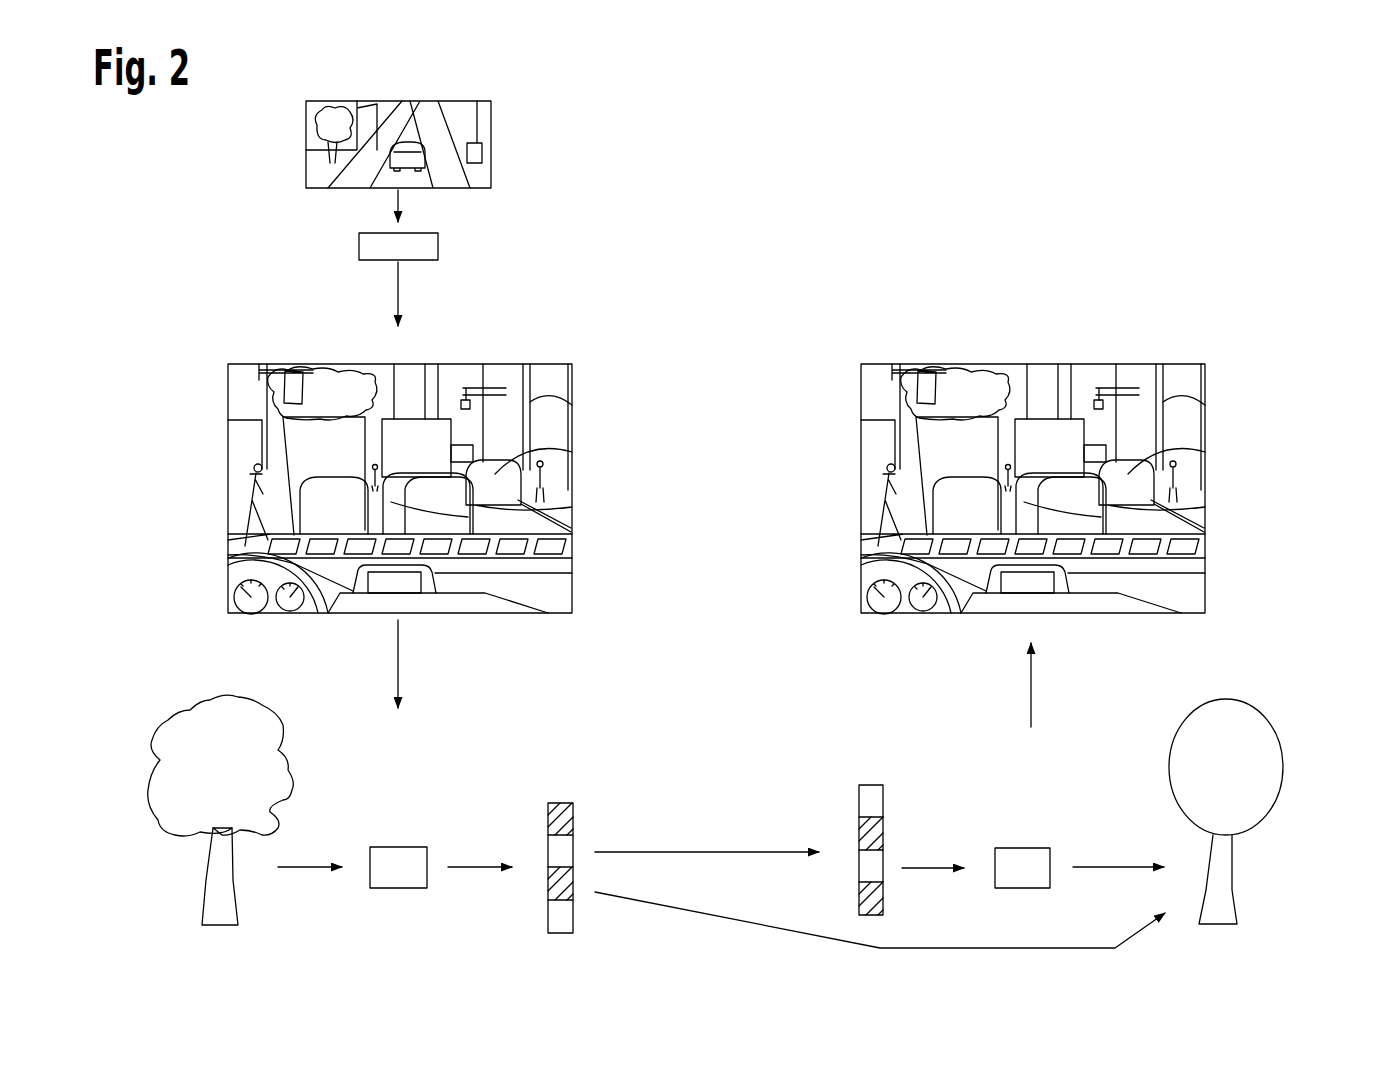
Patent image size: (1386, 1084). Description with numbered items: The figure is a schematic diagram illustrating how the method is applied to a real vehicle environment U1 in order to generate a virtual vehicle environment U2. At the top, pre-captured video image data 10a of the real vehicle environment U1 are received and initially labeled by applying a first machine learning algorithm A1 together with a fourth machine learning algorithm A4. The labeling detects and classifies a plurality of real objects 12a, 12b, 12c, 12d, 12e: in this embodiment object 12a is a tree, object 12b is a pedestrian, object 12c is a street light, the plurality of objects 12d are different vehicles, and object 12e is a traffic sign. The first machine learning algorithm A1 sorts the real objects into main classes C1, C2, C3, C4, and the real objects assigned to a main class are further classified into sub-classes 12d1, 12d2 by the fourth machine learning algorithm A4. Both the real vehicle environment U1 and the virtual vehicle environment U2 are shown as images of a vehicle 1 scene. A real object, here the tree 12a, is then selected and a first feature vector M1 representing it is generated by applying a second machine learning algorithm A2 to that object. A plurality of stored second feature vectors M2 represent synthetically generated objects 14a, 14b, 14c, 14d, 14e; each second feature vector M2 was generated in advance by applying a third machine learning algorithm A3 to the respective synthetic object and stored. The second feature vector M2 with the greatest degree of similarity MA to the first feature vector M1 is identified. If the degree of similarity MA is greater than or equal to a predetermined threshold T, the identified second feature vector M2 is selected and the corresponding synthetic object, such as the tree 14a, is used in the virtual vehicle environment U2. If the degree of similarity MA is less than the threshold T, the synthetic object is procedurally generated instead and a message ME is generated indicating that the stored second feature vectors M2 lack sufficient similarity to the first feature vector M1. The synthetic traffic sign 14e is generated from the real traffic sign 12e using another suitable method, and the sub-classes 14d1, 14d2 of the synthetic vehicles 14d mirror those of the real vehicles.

The vehicle 1 is at (400, 623).
The pre-captured video image data 10a is at (508, 142).
The real object (tree) 12a is at (322, 347).
The real object (pedestrian) 12b is at (186, 505).
The real object (street light) 12c is at (588, 413).
The real objects (vehicles) 12d is at (624, 483).
The sub-class 12d1 is at (624, 470).
The sub-class 12d2 is at (630, 518).
The real object (traffic sign) 12e is at (277, 339).
The synthetically generated object 14a is at (1129, 599).
The synthetically generated object 14b is at (835, 505).
The synthetically generated object 14c is at (1202, 413).
The synthetically generated object 14d is at (1237, 482).
The first other vehicle (second image) 14d1 is at (1237, 469).
The second other vehicle (second image) 14d2 is at (1263, 517).
The synthetic object (traffic sign) 14e is at (911, 339).
The real vehicle environment U1 is at (443, 397).
The virtual vehicle environment U2 is at (1072, 599).
The first machine learning algorithm A1 is at (326, 276).
The second machine learning algorithm A2 is at (398, 847).
The third machine learning algorithm A3 is at (1022, 848).
The fourth machine learning algorithm A4 is at (358, 246).
The main class C1 is at (178, 726).
The main class C2 is at (186, 505).
The main class C3 is at (588, 413).
The main class C4 is at (624, 470).
The first feature vector M1 is at (561, 803).
The second feature vector M2 is at (873, 785).
The degree of similarity MA is at (707, 833).
The predetermined threshold T is at (707, 833).
The message ME is at (880, 920).